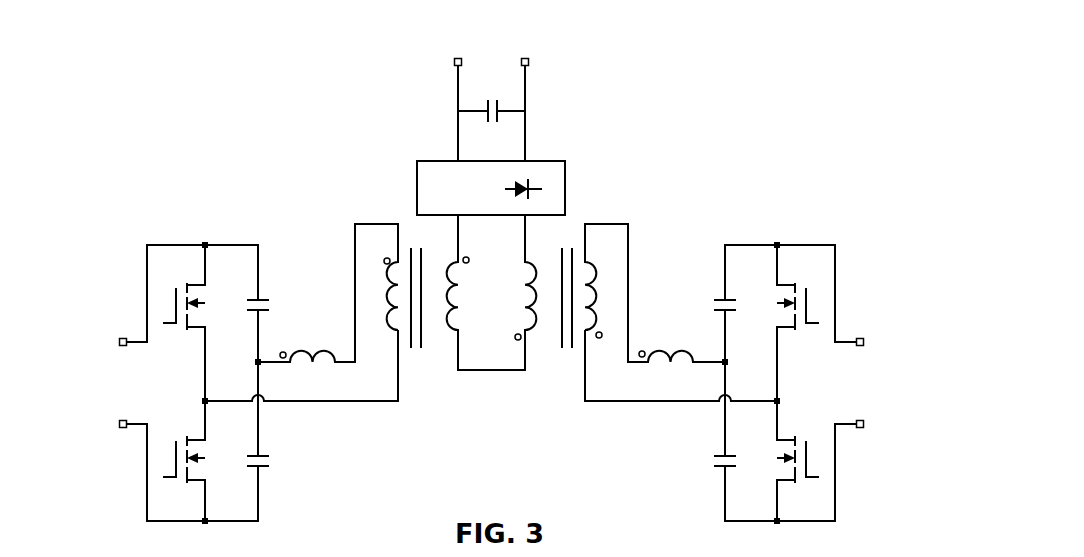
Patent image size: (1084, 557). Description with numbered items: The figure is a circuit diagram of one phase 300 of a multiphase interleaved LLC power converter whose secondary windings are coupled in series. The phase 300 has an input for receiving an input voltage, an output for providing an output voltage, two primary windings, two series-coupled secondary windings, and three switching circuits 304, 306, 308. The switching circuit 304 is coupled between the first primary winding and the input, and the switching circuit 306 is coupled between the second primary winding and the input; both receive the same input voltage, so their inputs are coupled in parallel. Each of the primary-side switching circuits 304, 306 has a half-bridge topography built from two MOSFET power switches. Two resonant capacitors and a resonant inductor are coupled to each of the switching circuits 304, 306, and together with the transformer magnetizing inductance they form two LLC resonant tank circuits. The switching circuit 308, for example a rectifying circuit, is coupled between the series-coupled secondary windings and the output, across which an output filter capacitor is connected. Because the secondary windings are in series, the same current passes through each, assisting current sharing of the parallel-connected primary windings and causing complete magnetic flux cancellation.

The phase 300 is at (137, 66).
The switching circuit 304 is at (188, 191).
The switching circuit 306 is at (775, 189).
The switching circuit 308 is at (417, 188).